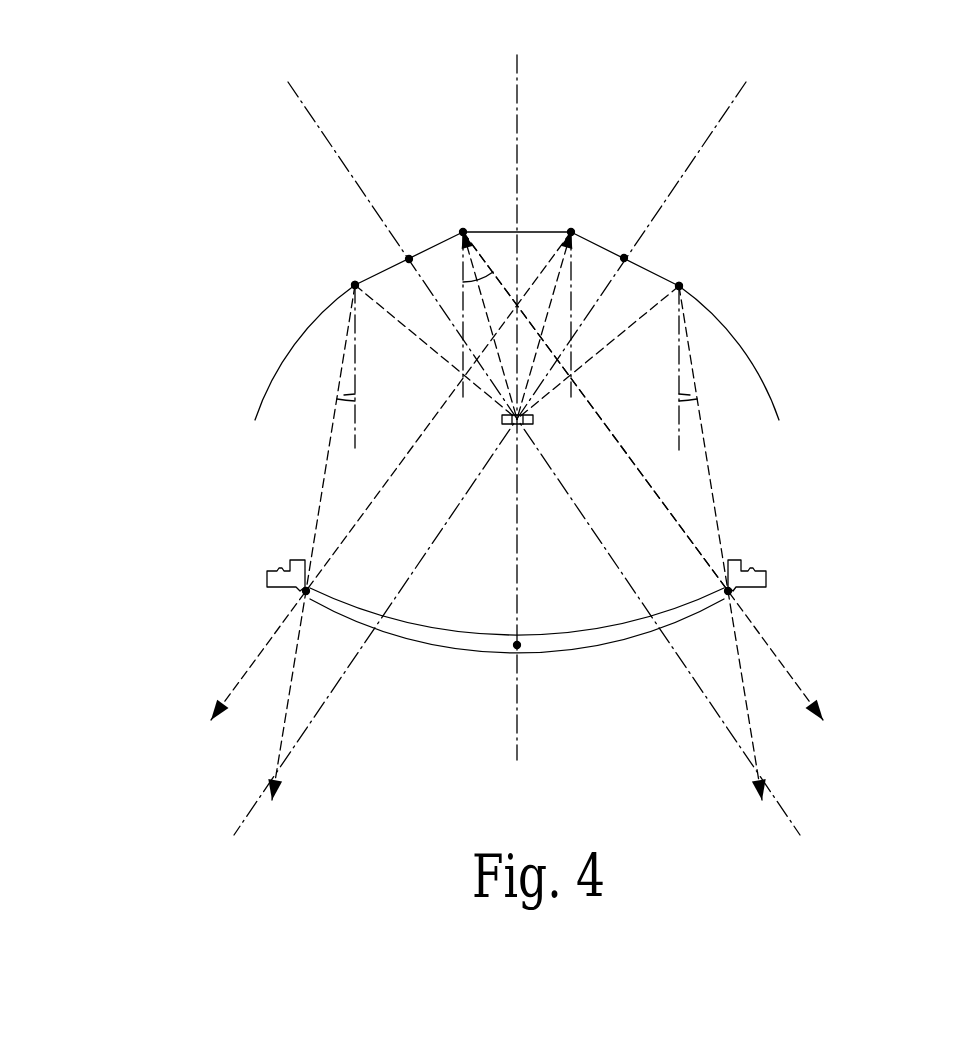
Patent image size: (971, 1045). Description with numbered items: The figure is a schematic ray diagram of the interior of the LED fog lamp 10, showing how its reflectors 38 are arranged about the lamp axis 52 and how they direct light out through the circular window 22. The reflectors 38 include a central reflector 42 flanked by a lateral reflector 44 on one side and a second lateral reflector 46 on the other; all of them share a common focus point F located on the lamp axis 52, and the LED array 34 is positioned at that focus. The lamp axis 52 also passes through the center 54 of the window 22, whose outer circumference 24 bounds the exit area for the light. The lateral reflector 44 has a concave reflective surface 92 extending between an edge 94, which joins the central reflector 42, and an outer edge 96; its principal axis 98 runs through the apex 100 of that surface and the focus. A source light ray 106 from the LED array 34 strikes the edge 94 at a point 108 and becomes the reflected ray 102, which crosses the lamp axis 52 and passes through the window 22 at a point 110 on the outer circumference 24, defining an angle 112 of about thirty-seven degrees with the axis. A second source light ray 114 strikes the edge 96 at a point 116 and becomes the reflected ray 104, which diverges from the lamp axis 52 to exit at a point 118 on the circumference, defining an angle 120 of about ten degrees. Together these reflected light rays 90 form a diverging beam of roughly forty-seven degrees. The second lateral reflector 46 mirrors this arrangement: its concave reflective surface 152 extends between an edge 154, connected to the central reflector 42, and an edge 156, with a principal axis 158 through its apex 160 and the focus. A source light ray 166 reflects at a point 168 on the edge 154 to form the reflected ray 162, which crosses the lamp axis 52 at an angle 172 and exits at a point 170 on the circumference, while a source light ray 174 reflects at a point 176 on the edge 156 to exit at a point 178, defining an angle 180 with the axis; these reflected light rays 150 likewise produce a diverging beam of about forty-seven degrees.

The fog lamp 10 is at (854, 155).
The window 22 is at (607, 641).
The outer circumference 24 is at (520, 598).
The LED array 34 is at (534, 419).
The reflectors 38 is at (195, 345).
The central reflector 42 is at (540, 231).
The lateral reflector 44 is at (375, 272).
The second lateral reflector 46 is at (660, 272).
The lamp axis 52 is at (518, 100).
The center 54 is at (520, 643).
The reflected light rays 90 is at (360, 473).
The reflective surface 92 is at (392, 261).
The edge 94 is at (457, 224).
The edge 96 is at (349, 285).
The principal axis 98 is at (335, 140).
The apex 100 is at (409, 257).
The reflected ray 102 is at (615, 433).
The reflected ray 104 is at (312, 533).
The source light ray 106 is at (490, 318).
The point 108 is at (465, 230).
The point 110 is at (803, 598).
The angle 112 is at (478, 270).
The source light ray 114 is at (405, 331).
The point 116 is at (354, 283).
The point 118 is at (235, 598).
The angle 120 is at (350, 398).
The reflected light rays 150 is at (674, 472).
The reflective surface 152 is at (642, 261).
The edge 154 is at (571, 229).
The edge 156 is at (686, 286).
The principal axis 158 is at (700, 142).
The apex 160 is at (623, 256).
The reflected ray 162 is at (410, 447).
The source light ray 166 is at (560, 298).
The point 168 is at (574, 231).
The point 170 is at (300, 596).
The angle 172 is at (570, 347).
The source light ray 174 is at (647, 313).
The point 176 is at (682, 284).
The point 178 is at (735, 596).
The angle 180 is at (686, 398).